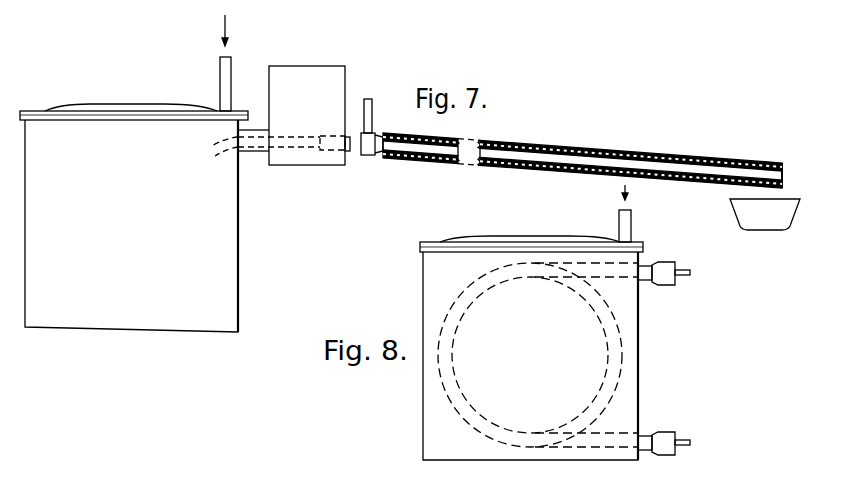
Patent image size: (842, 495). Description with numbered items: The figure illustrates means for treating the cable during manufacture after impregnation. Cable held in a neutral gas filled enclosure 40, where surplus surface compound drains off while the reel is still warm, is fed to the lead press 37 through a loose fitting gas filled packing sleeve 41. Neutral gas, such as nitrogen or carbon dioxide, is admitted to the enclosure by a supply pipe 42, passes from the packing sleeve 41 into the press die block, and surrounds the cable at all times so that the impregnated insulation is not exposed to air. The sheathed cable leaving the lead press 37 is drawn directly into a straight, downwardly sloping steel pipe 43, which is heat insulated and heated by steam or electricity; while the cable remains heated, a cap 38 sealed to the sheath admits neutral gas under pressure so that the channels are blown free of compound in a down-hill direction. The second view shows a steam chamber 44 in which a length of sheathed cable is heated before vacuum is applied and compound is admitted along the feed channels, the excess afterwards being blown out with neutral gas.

In FIG. 7, the lead press 37 is at (309, 115).
In FIG. 7, the cap 38 is at (371, 154).
In FIG. 7, the neutral gas filled enclosure 40 is at (225, 224).
In FIG. 7, the gas filled packing sleeve 41 is at (256, 151).
In FIG. 7, the supply pipe 42 is at (229, 83).
In FIG. 7, the steel pipe 43 is at (554, 159).
In FIG. 8, the steam chamber 44 is at (430, 272).